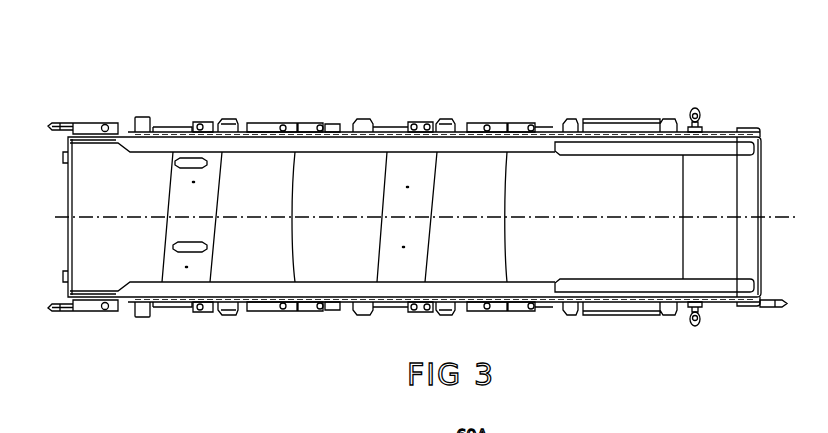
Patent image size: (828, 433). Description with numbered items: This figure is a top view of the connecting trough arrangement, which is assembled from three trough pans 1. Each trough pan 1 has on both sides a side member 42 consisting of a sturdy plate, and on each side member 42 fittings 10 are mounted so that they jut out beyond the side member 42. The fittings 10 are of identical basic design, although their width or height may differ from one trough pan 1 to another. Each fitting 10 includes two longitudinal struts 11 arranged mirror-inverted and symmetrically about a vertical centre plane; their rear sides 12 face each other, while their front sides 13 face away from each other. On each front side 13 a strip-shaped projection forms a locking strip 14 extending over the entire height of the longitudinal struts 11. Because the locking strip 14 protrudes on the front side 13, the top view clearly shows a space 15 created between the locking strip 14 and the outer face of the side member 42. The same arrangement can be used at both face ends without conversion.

The trough pan 1 is at (207, 87).
The fitting 10 is at (222, 110).
The longitudinal strut 11 is at (146, 117).
The rear side 12 is at (158, 123).
The front side 13 is at (131, 138).
The locking strip 14 is at (135, 123).
The space 15 is at (132, 302).
The side member 42 is at (247, 132).